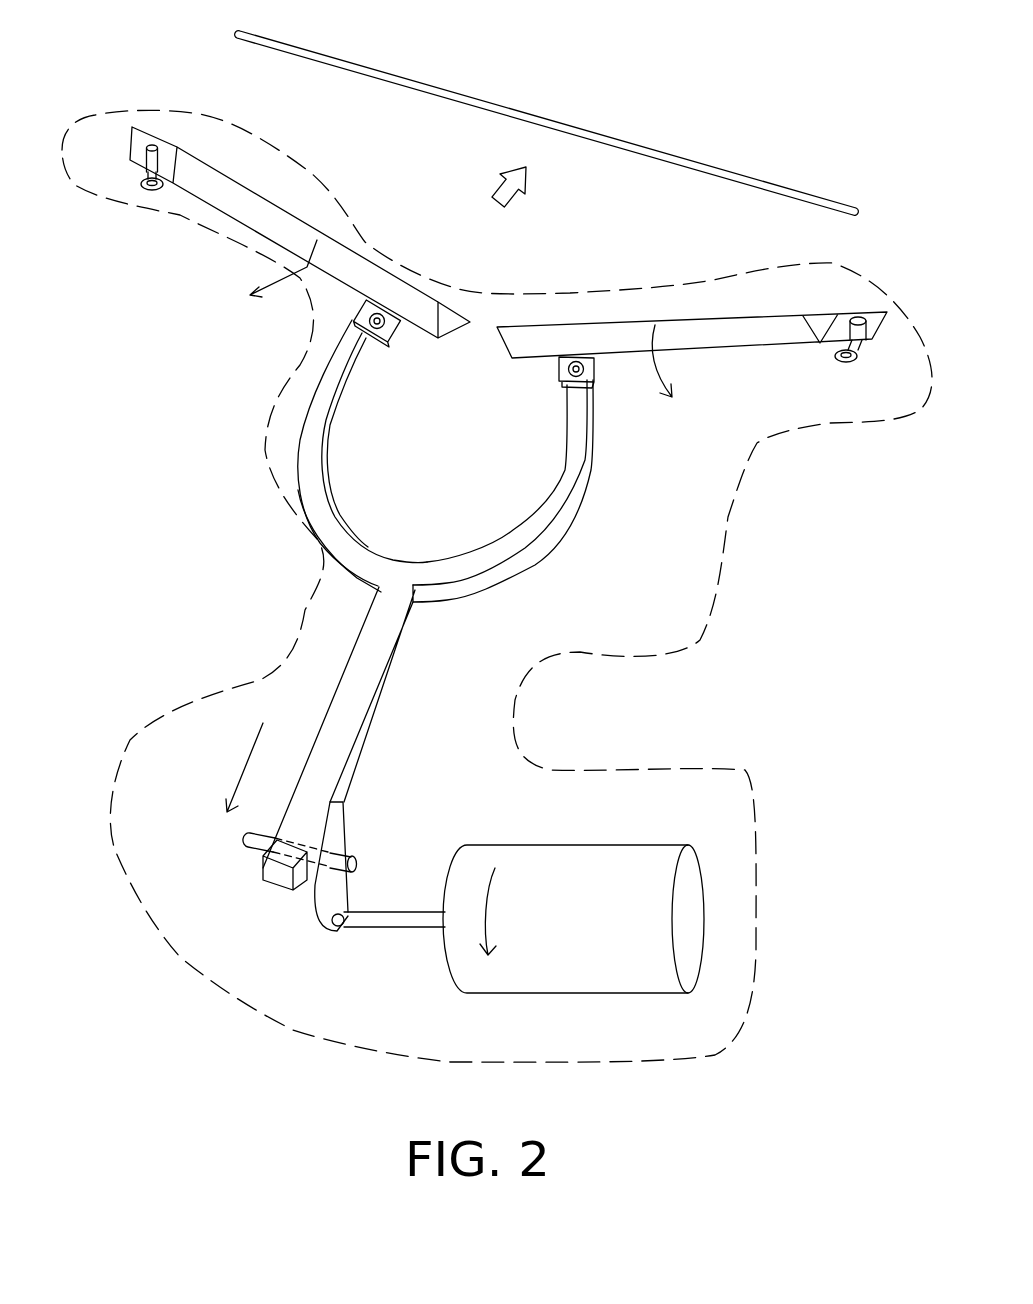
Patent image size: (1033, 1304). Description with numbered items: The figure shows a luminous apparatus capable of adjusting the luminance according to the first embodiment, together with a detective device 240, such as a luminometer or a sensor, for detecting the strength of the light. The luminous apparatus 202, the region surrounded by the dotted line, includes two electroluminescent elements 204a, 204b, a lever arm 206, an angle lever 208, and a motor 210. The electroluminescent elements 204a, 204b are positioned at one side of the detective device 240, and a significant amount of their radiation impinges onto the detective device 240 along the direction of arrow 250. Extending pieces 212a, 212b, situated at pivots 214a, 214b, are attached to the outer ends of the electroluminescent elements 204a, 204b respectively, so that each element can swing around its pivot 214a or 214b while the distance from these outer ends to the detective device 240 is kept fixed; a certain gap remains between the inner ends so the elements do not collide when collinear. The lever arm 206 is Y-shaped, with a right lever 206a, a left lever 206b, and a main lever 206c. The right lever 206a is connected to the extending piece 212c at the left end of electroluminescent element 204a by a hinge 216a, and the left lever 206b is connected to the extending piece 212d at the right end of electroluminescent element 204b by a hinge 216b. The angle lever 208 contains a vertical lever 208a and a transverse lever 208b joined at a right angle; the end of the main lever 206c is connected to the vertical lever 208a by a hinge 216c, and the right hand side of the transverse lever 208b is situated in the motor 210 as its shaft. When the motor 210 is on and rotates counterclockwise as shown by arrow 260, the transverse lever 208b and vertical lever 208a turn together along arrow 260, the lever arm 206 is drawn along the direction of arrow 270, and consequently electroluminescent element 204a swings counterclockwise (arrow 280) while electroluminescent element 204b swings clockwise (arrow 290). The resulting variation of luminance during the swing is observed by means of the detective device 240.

The luminous apparatus 202 is at (752, 578).
The electroluminescent element 204a is at (713, 330).
The electroluminescent element 204b is at (213, 192).
The lever arm 206 is at (384, 594).
The right lever 206a is at (537, 515).
The left lever 206b is at (305, 478).
The main lever 206c is at (363, 668).
The angle lever 208 is at (421, 908).
The vertical lever 208a is at (338, 887).
The transverse lever 208b is at (397, 922).
The motor 210 is at (592, 865).
The extending piece 212a is at (865, 330).
The extending piece 212b is at (148, 133).
The extending piece 212c is at (593, 369).
The extending piece 212d is at (363, 316).
The pivot 214a is at (838, 350).
The pivot 214b is at (142, 160).
The hinge 216a is at (594, 384).
The hinge 216b is at (362, 336).
The hinge 216c is at (350, 853).
The detective device 240 is at (633, 147).
The arrow 250 is at (518, 207).
The arrow 260 is at (487, 912).
The arrow 270 is at (243, 768).
The arrow 280 is at (657, 365).
The arrow 290 is at (305, 292).